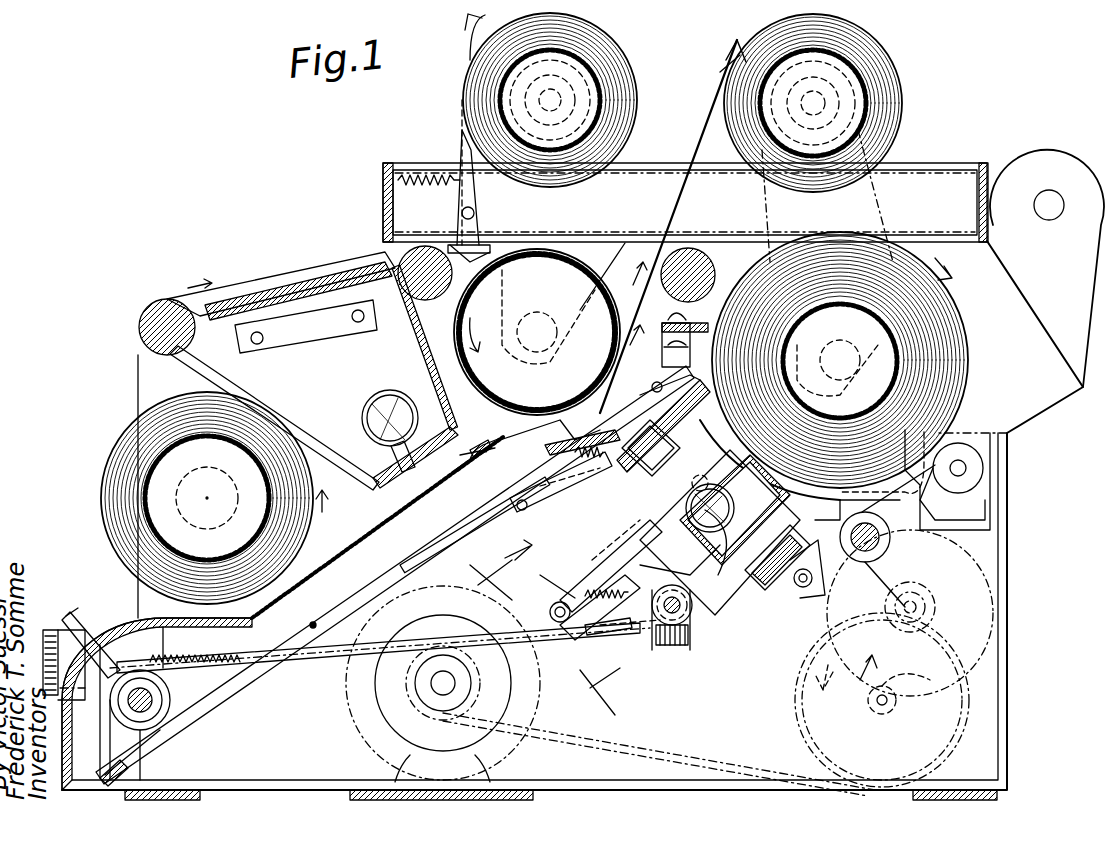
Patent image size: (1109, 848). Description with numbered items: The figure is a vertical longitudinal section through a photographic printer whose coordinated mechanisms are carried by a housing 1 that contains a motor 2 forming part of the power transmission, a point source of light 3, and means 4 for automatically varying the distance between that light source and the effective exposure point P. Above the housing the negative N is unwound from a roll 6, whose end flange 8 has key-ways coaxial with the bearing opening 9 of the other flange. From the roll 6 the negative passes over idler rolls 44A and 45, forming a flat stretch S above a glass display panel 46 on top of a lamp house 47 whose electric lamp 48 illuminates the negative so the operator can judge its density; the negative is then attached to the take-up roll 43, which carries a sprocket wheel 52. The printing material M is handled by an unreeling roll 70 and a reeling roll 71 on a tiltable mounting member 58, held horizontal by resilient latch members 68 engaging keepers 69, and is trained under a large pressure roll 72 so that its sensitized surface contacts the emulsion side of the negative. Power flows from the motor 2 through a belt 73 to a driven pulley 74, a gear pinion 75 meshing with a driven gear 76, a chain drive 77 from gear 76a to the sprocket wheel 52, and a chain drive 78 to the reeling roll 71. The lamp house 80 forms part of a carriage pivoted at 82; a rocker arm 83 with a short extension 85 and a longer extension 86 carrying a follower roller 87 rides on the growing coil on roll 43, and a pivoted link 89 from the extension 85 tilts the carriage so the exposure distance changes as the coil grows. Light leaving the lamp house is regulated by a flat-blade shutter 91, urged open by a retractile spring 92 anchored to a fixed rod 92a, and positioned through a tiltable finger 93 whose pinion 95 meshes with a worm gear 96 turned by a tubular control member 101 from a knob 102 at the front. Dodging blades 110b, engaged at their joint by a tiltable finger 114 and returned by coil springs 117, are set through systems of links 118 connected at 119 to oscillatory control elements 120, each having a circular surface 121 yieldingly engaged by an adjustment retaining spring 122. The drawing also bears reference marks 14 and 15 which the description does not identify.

The housing 1 is at (990, 552).
The motor 2 is at (370, 688).
The point source of light 3 is at (699, 511).
The means for automatically varying the distance 4 is at (807, 578).
The roll 6 is at (214, 498).
The end flange 8 is at (475, 510).
The bearing opening 9 is at (702, 458).
The direction indicator 14 is at (550, 637).
The direction indicator 15 is at (557, 578).
The roll 43 is at (840, 360).
The idler roll 44A is at (160, 305).
The idler rolls 45 is at (425, 300).
The glass viewing or display panel 46 is at (278, 290).
The lamp house 47 is at (346, 376).
The electric lamp 48 is at (358, 422).
The sprocket wheel 52 is at (945, 378).
The mounting member 58 is at (685, 202).
The resilient latch members 68 is at (478, 197).
The keepers 69 is at (499, 231).
The unreeling roll 70 is at (590, 93).
The reeling roll 71 is at (848, 107).
The idler or pressure roll 72 is at (550, 332).
The power transferring belt 73 is at (655, 748).
The driven pulley 74 is at (795, 692).
The gear pinion 75 is at (882, 718).
The driven gear 76 is at (918, 695).
The gear 76a is at (925, 620).
The chain drive 77 is at (917, 564).
The chain drive 78 is at (880, 222).
The lamp house 80 is at (692, 560).
The pivot 82 is at (560, 624).
The rocker arm 83 is at (905, 521).
The short lower extension 85 is at (818, 565).
The longer extension 86 is at (958, 490).
The follower roller 87 is at (984, 462).
The pivoted link 89 is at (770, 545).
The flat-blade shutter 91 is at (640, 520).
The retractile spring 92 is at (588, 630).
The fixed rod 92a is at (605, 630).
The tiltable finger 93 is at (600, 534).
The pinion 95 is at (698, 630).
The worm gear 96 is at (678, 645).
The tubular control member 101 is at (420, 648).
The manually actuable knob 102 is at (50, 626).
The blades 110b is at (560, 433).
The tiltable finger 114 is at (606, 456).
The coil retractile springs 117 is at (520, 490).
The system of links 118 is at (368, 572).
The operative connection 119 is at (165, 715).
The oscillatory control element 120 is at (102, 630).
The circular surface 121 is at (170, 690).
The adjustment retaining spring 122 is at (148, 740).
The printing material M is at (700, 125).
The negative N is at (195, 372).
The effective exposure point P is at (626, 396).
The stretch S is at (305, 262).